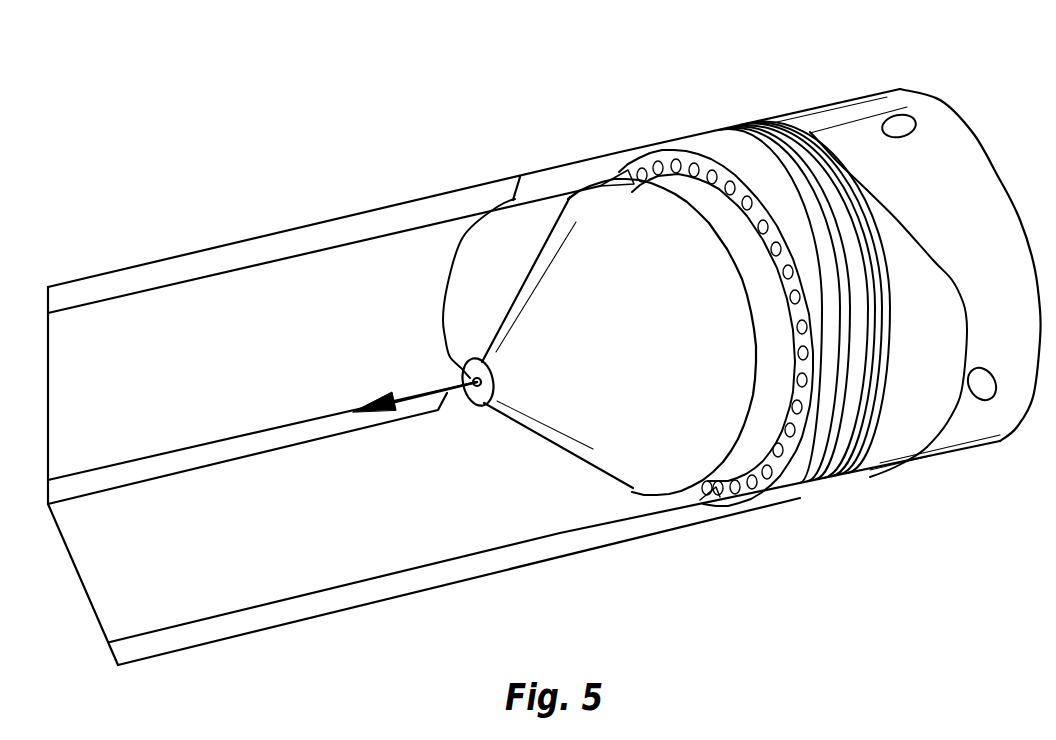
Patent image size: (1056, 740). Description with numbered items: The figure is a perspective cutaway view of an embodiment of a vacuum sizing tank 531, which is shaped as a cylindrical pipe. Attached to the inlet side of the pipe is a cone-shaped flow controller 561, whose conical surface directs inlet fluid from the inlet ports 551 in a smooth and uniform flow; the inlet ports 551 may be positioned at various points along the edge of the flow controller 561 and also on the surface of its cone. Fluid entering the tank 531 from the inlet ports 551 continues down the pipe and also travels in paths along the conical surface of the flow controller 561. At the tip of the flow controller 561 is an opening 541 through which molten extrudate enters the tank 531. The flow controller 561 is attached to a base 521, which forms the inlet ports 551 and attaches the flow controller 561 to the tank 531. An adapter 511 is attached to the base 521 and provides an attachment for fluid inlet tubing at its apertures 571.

The adapter 511 is at (957, 172).
The base 521 is at (813, 127).
The vacuum sizing tank 531 is at (560, 175).
The opening 541 is at (480, 350).
The inlet ports 551 is at (672, 167).
The flow controller 561 is at (633, 415).
The apertures 571 is at (896, 122).